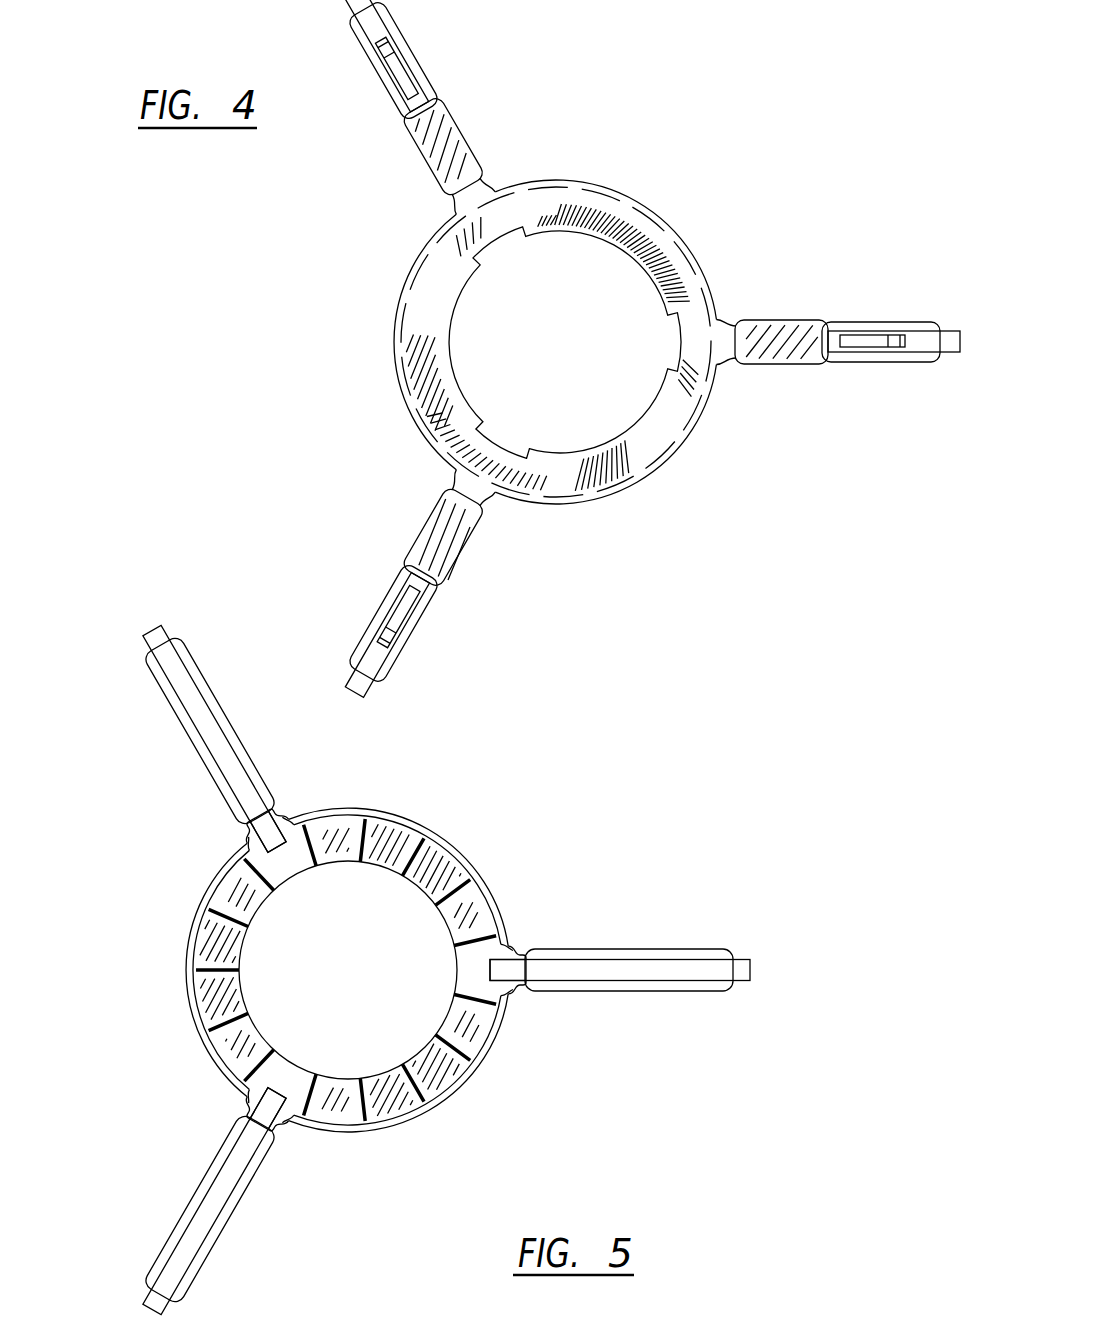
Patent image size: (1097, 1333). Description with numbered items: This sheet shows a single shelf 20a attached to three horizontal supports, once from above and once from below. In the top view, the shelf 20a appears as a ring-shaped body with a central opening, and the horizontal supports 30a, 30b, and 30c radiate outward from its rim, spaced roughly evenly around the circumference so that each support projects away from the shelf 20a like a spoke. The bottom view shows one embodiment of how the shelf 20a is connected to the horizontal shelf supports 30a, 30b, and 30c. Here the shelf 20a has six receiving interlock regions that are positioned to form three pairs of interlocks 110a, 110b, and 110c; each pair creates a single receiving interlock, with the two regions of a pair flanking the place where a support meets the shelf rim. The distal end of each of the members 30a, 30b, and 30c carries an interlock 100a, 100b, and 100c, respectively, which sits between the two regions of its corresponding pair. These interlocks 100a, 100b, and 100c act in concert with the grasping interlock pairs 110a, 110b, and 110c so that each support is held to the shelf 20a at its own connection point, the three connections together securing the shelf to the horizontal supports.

In FIG. 4, the shelf 20a is at (648, 228).
In FIG. 5, the shelf 20a is at (453, 853).
In FIG. 4, the horizontal support 30a is at (777, 357).
In FIG. 5, the horizontal support 30a is at (642, 972).
In FIG. 4, the horizontal support 30b is at (437, 117).
In FIG. 5, the horizontal support 30b is at (183, 693).
In FIG. 4, the horizontal support 30c is at (447, 538).
In FIG. 5, the horizontal support 30c is at (200, 1227).
In FIG. 5, the interlock 100a is at (502, 965).
In FIG. 5, the interlock 100b is at (283, 862).
In FIG. 5, the interlock 100c is at (285, 1080).
In FIG. 5, the interlock pair 110a is at (523, 950).
In FIG. 5, the interlock pair 110b is at (273, 813).
In FIG. 5, the interlock pair 110c is at (240, 1118).